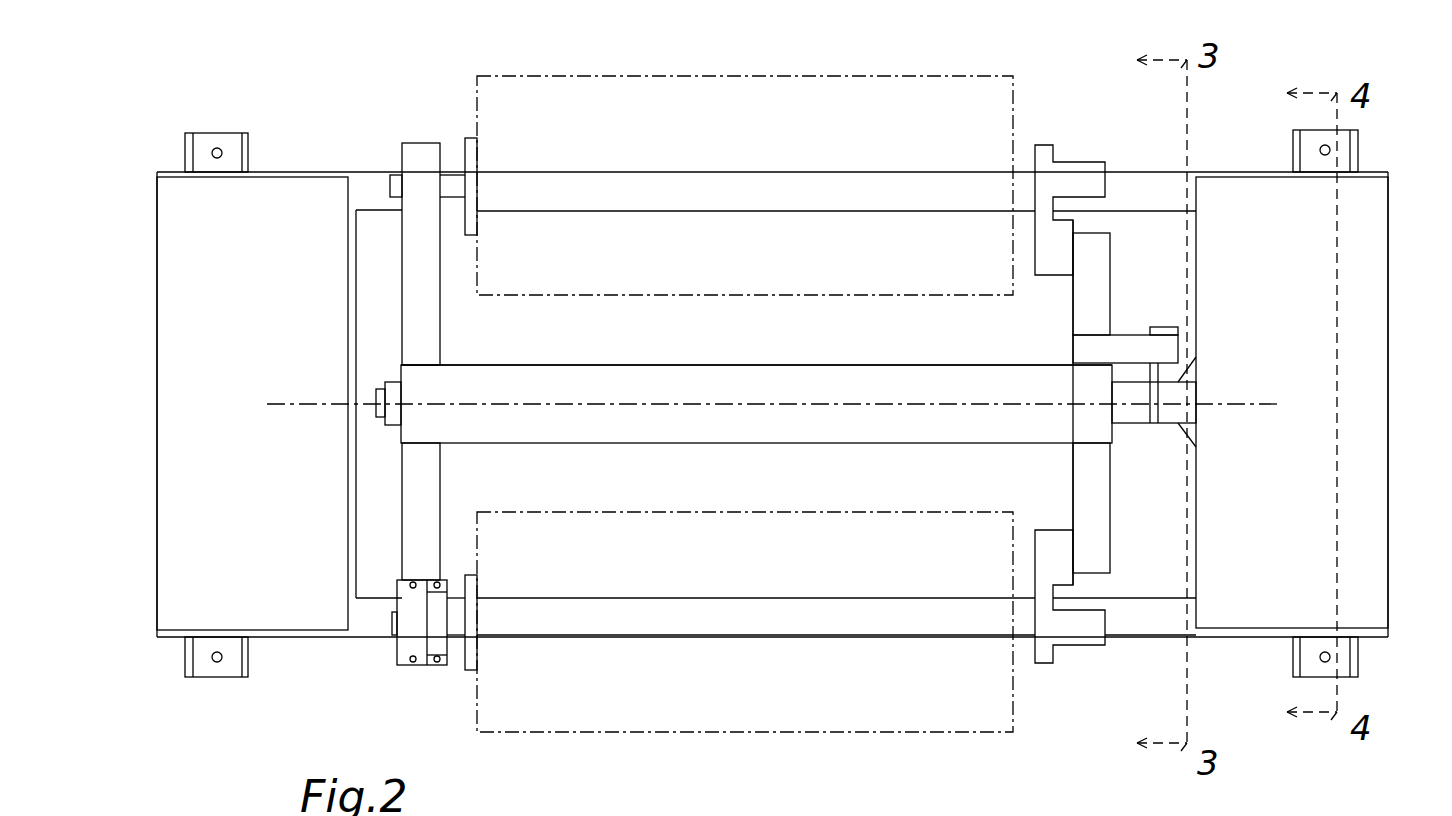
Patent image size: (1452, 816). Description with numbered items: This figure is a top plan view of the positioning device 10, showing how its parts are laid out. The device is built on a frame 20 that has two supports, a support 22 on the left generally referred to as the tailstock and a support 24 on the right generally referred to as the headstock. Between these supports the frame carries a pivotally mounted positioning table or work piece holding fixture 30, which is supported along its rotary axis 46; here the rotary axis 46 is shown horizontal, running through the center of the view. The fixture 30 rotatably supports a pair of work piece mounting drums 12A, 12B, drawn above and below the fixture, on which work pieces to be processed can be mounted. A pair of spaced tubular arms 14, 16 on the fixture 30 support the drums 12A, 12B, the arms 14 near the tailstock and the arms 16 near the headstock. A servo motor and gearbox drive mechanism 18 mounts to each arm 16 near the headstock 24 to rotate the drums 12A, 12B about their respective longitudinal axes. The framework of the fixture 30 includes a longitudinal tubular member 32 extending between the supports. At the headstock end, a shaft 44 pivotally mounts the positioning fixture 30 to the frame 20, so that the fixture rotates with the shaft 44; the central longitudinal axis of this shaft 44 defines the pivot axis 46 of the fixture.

The positioning device 10 is at (200, 82).
The frame 20 is at (300, 148).
The support (tailstock) 22 is at (178, 470).
The support (headstock) 24 is at (1375, 295).
The tubular arm 14 is at (418, 147).
The work piece mounting drum 12A is at (580, 715).
The work piece mounting drum 12B is at (665, 77).
The servo motor and gearbox drive mechanism 18 is at (1075, 155).
The tubular arm 16 is at (1100, 285).
The positioning table or work piece holding fixture 30 is at (748, 365).
The longitudinal tubular member 32 is at (870, 372).
The shaft 44 is at (1122, 425).
The rotary axis (pivot axis) 46 is at (277, 403).